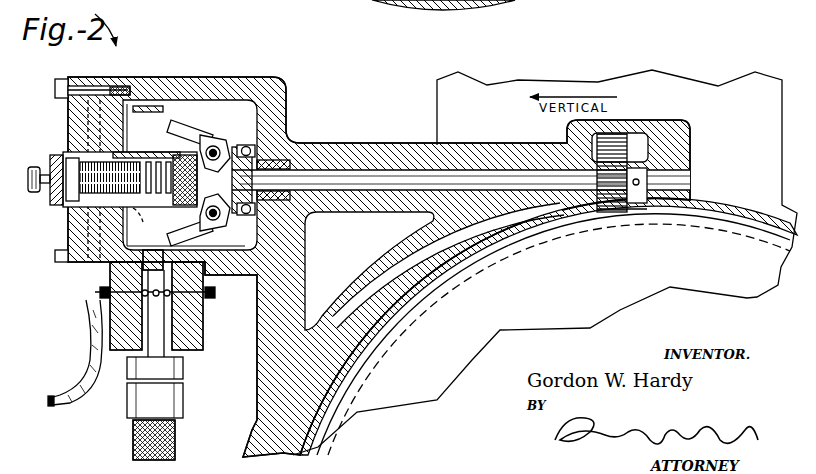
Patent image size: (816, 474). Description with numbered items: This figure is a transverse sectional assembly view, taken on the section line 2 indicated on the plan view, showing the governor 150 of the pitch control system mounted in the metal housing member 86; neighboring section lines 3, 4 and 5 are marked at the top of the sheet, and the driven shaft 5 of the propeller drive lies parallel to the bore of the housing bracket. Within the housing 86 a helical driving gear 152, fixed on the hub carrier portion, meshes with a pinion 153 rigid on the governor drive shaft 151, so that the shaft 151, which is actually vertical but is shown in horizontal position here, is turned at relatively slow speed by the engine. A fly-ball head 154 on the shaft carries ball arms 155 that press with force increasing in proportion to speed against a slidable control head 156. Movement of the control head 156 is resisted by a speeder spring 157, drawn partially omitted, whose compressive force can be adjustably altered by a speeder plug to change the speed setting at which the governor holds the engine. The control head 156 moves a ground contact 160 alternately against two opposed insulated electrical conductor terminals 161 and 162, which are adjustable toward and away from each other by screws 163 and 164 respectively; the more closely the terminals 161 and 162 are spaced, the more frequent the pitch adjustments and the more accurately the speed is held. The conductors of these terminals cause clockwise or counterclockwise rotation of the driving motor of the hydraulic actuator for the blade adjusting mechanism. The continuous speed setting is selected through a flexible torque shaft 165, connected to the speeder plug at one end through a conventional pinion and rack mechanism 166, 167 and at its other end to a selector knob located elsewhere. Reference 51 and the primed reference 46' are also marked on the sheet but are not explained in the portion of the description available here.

The governor 150 is at (306, 128).
The governor drive shaft 151 is at (460, 165).
The driving gear 152 is at (513, 228).
The pinion 153 is at (613, 143).
The fly-ball head 154 is at (234, 145).
The ball arms 155 is at (216, 118).
The control head 156 is at (147, 106).
The speeder spring 157 is at (158, 203).
The ground contact 160 is at (165, 294).
The conductor terminal 161 is at (100, 292).
The conductor terminal 162 is at (204, 290).
The screw 163 is at (100, 313).
The screw 164 is at (213, 298).
The flexible torque shaft 165 is at (50, 398).
The pinion 166 is at (150, 227).
The rack 167 is at (134, 158).
The housing member 86 is at (692, 141).
The driven shaft 5 is at (247, 0).
The section line 51 is at (327, 0).
The section line 4— 4 is at (326, 32).
The section line 3— 3 is at (484, 3).
The section line 2— 2 is at (388, 0).
The member 46' is at (558, 8).